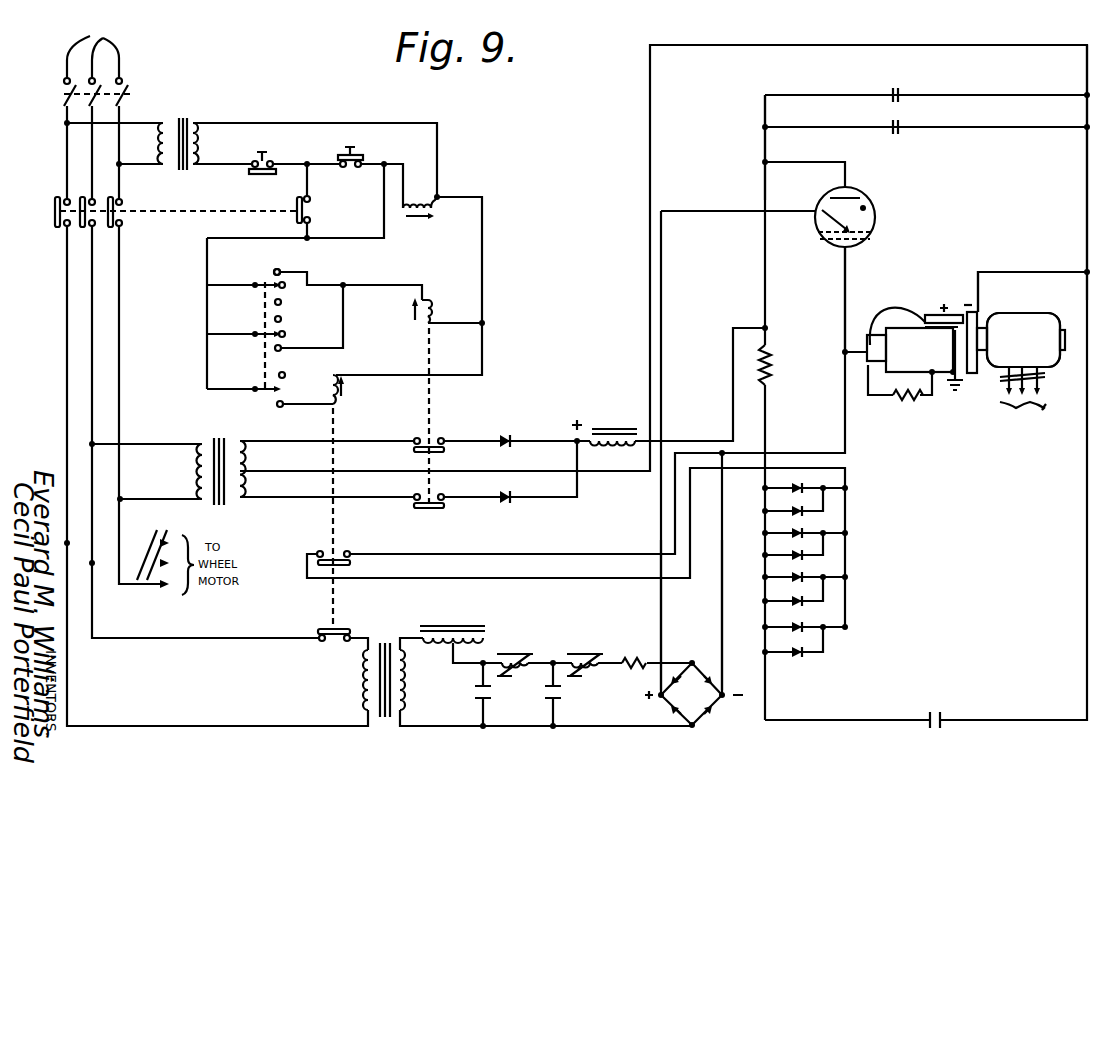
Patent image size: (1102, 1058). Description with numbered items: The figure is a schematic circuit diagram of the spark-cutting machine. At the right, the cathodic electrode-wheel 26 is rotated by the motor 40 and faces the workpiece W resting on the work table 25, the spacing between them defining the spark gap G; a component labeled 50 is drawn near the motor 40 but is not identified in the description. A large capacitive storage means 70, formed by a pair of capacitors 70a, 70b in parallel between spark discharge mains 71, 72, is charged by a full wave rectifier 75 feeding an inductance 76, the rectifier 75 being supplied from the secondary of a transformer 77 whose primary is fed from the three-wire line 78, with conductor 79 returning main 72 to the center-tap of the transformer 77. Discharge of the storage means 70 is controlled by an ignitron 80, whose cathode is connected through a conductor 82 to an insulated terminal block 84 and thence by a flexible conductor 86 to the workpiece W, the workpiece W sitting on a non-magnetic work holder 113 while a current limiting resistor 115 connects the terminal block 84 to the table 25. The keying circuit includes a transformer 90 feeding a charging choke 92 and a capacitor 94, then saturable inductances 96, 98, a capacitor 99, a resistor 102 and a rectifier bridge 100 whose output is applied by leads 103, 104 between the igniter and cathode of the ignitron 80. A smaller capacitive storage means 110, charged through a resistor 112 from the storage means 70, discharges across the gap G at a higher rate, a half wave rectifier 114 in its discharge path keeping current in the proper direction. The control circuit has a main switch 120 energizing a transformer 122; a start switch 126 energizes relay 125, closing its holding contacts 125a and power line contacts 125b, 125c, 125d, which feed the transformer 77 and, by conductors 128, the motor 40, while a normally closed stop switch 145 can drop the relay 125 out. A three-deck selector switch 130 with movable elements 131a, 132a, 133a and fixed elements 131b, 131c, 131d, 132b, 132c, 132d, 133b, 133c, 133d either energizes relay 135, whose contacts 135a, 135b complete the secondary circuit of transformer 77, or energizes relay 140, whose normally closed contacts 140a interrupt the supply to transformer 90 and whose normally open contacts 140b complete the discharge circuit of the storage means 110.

The 3-wire line 78 is at (94, 47).
The main switch 120 is at (130, 93).
The transformer 122 is at (184, 168).
The stop switch 145 is at (254, 172).
The start switch 126 is at (352, 168).
The holding contacts 125a is at (329, 207).
The relay 125 is at (447, 210).
The power line contacts 125b is at (57, 228).
The power line contacts 125c is at (82, 228).
The power line contacts 125d is at (110, 228).
The three-position selector switch 130 is at (272, 267).
The movable switch element 131a is at (256, 286).
The fixed switch element 131b is at (281, 271).
The fixed switch element 131c is at (305, 293).
The fixed switch element 131d is at (304, 310).
The movable switch element 132a is at (255, 333).
The fixed switch element 132b is at (282, 319).
The fixed switch element 132c is at (306, 341).
The fixed switch element 132d is at (284, 352).
The movable switch element 133a is at (263, 390).
The fixed switch element 133b is at (284, 375).
The fixed switch element 133c is at (278, 386).
The fixed switch element 133d is at (277, 408).
The relay 135 is at (428, 296).
The relay 140 is at (336, 396).
The transformer 77 is at (210, 436).
The conductors 128 is at (1048, 380).
The relay contacts 135a is at (414, 438).
The relay contacts 135b is at (414, 495).
The rectifier 75 is at (503, 437).
The inductance 76 is at (628, 422).
The relay contacts 140b is at (338, 557).
The relay contacts 140a is at (334, 636).
The transformer 90 is at (383, 645).
The charging choke 92 is at (452, 628).
The saturable inductance 96 is at (508, 657).
The saturable inductance 98 is at (578, 657).
The resistor 102 is at (630, 660).
The rectifier bridge 100 is at (694, 694).
The capacitor 94 is at (492, 700).
The capacitor 99 is at (562, 700).
The lead 103 is at (661, 592).
The lead 104 is at (722, 602).
The half wave rectifier 114 is at (851, 556).
The capacitive storage means 110 is at (936, 710).
The conductor 79 is at (692, 46).
The capacitive storage means 70 is at (905, 86).
The capacitor 70a is at (900, 101).
The capacitor 70b is at (900, 133).
The spark discharge main 71 is at (763, 139).
The spark discharge main 72 is at (1086, 146).
The ignitron 80 is at (867, 192).
The conductor 82 is at (843, 293).
The flexible conductor 86 is at (876, 320).
The workpiece W is at (935, 313).
The spark gap G is at (967, 310).
The wheel motor housing 50 is at (1024, 272).
The motor 40 is at (1046, 314).
The work holder 113 is at (945, 330).
The insulated terminal block 84 is at (866, 360).
The work table 25 is at (895, 374).
The electrode-wheel 26 is at (962, 384).
The current limiting resistor 115 is at (897, 402).
The resistor 112 is at (769, 353).